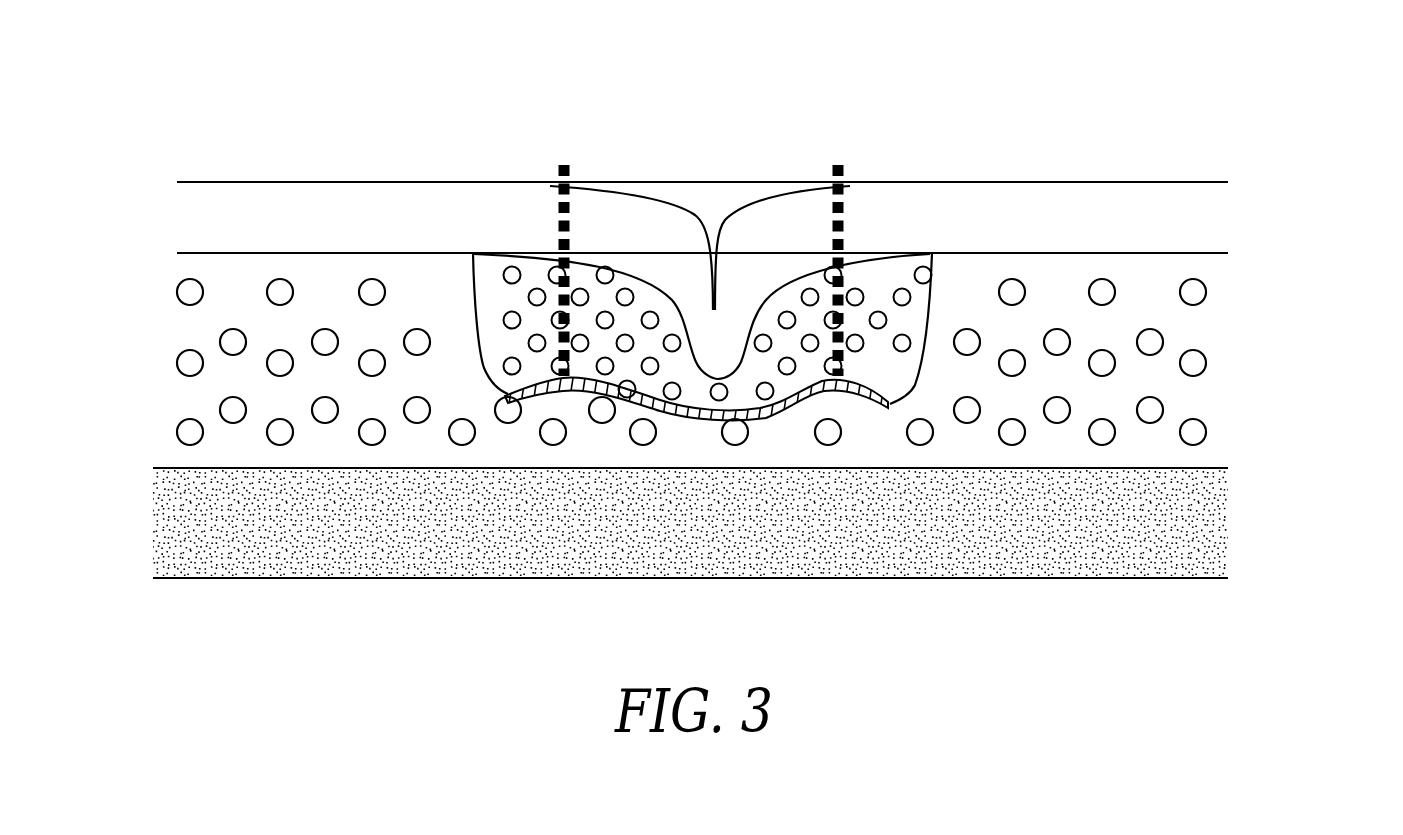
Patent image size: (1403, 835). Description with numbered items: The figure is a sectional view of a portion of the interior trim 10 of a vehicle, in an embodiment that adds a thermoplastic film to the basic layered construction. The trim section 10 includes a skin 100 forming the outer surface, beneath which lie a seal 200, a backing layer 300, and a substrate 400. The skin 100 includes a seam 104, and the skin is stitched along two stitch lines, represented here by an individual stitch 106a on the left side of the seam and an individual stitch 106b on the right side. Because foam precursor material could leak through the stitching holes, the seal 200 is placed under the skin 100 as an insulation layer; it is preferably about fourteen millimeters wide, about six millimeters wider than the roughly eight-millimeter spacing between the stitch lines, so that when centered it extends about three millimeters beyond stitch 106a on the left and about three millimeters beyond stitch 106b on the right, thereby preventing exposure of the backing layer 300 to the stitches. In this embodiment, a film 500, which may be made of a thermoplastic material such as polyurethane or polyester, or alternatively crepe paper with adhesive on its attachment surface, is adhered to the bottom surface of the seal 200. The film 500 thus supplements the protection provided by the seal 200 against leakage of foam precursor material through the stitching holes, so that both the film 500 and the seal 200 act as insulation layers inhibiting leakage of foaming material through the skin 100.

The interior trim section 10 is at (340, 103).
The skin 100 is at (772, 216).
The seam 104 is at (710, 222).
The stitch 106a is at (565, 164).
The stitch 106b is at (838, 166).
The seal 200 is at (508, 300).
The backing layer 300 is at (1245, 370).
The substrate 400 is at (1255, 518).
The film 500 is at (558, 379).